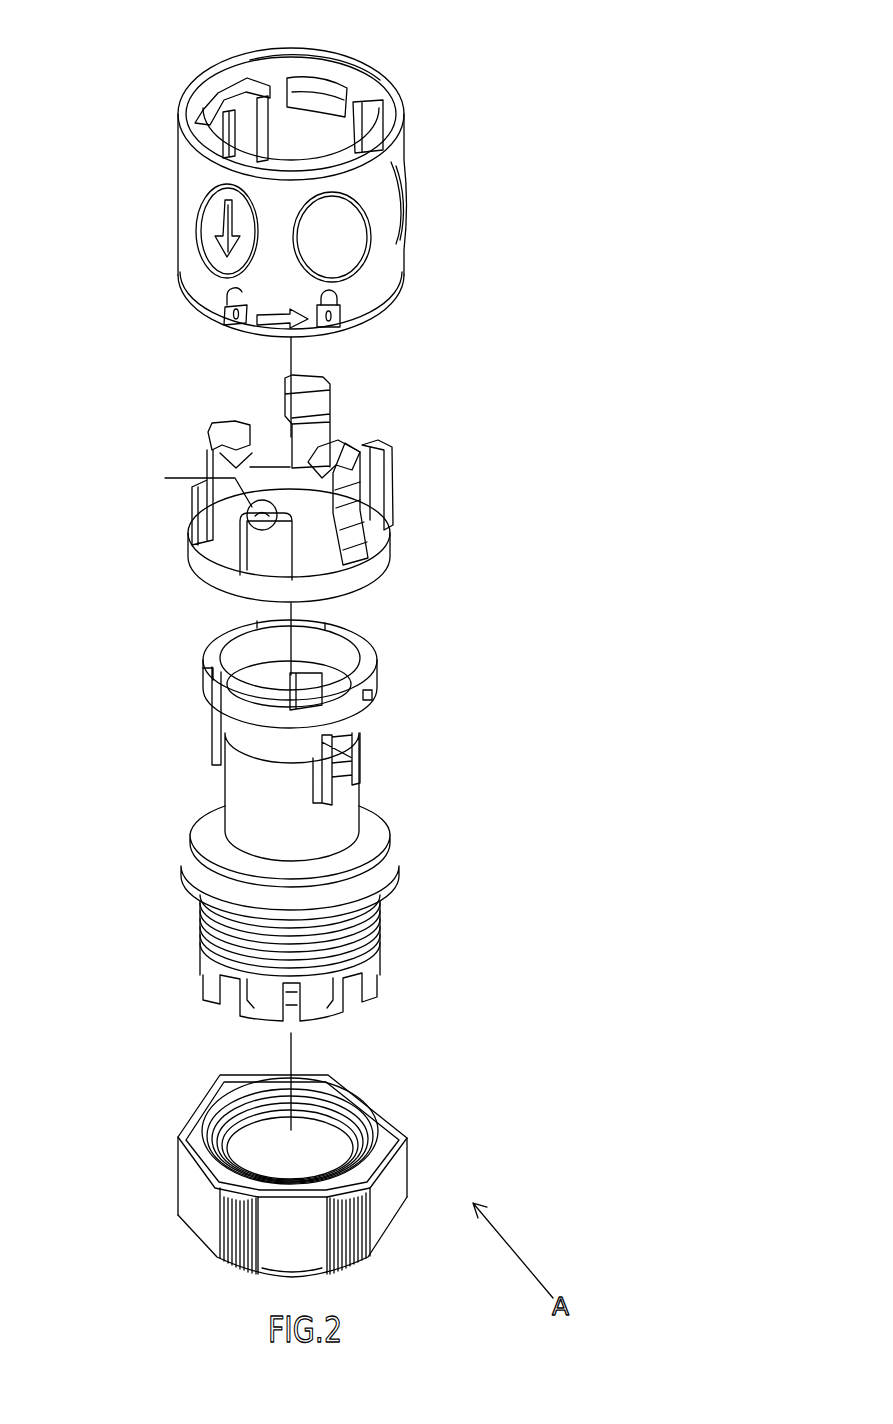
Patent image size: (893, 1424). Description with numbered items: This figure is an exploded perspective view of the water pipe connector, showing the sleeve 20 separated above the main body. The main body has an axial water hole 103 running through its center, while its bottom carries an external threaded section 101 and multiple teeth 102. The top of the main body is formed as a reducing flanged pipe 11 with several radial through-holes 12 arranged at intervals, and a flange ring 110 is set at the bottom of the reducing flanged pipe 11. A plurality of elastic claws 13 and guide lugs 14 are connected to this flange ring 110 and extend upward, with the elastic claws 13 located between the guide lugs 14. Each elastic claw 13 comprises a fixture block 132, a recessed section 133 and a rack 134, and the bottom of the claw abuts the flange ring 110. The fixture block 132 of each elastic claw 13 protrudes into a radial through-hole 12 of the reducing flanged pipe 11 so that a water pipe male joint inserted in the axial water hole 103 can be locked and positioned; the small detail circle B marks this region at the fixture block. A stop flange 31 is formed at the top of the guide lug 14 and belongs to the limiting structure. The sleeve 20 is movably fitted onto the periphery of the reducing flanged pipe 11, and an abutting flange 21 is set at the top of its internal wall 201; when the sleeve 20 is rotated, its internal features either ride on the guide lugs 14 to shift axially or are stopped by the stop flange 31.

The sleeve 20 is at (405, 257).
The internal wall 201 is at (337, 70).
The abutting flange 21 is at (322, 100).
The elastic claw 13 is at (358, 488).
The fixture block 132 is at (373, 447).
The recessed section 133 is at (348, 493).
The rack 134 is at (355, 546).
The stop flange 31 is at (212, 430).
The guide lug 14 is at (257, 553).
The reducing flanged pipe 11 is at (237, 815).
The radial through-hole 12 is at (310, 690).
The axial water hole 103 is at (253, 700).
The flange ring 110 is at (213, 850).
The external threaded section 101 is at (337, 945).
The teeth 102 is at (232, 992).
The detail B is at (221, 491).